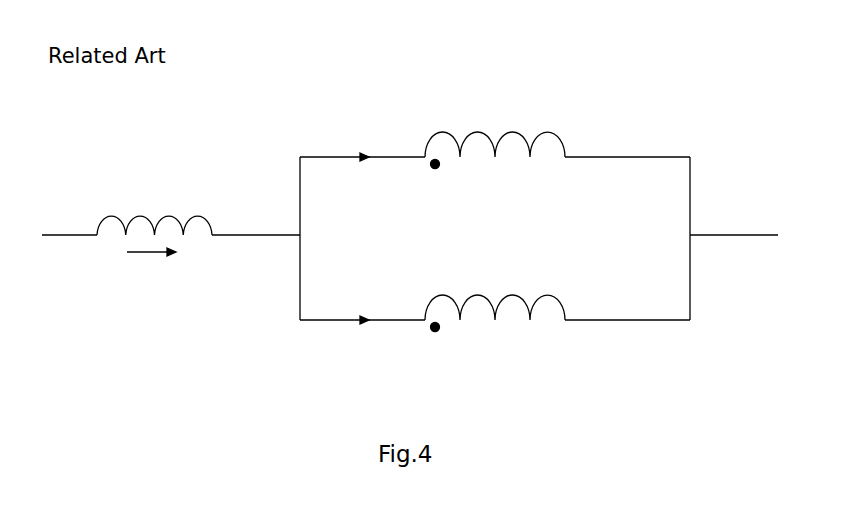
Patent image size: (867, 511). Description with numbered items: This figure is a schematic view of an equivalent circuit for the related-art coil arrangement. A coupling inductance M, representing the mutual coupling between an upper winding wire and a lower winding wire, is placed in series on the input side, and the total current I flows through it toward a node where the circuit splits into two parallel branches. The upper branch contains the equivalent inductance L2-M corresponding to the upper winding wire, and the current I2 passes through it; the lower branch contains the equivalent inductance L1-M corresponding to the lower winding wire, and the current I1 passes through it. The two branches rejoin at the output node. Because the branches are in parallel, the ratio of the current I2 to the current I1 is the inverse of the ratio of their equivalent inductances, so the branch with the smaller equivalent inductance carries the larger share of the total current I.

The coupling inductance M is at (154, 207).
The current I is at (151, 265).
The current passing through the winding wire L1 I1 is at (365, 339).
The current passing through the winding wire L2 I2 is at (365, 141).
The equivalent inductance corresponding to the lower winding wire L1 L1-M is at (495, 332).
The equivalent inductance corresponding to the upper winding wire L2 L2-M is at (495, 134).